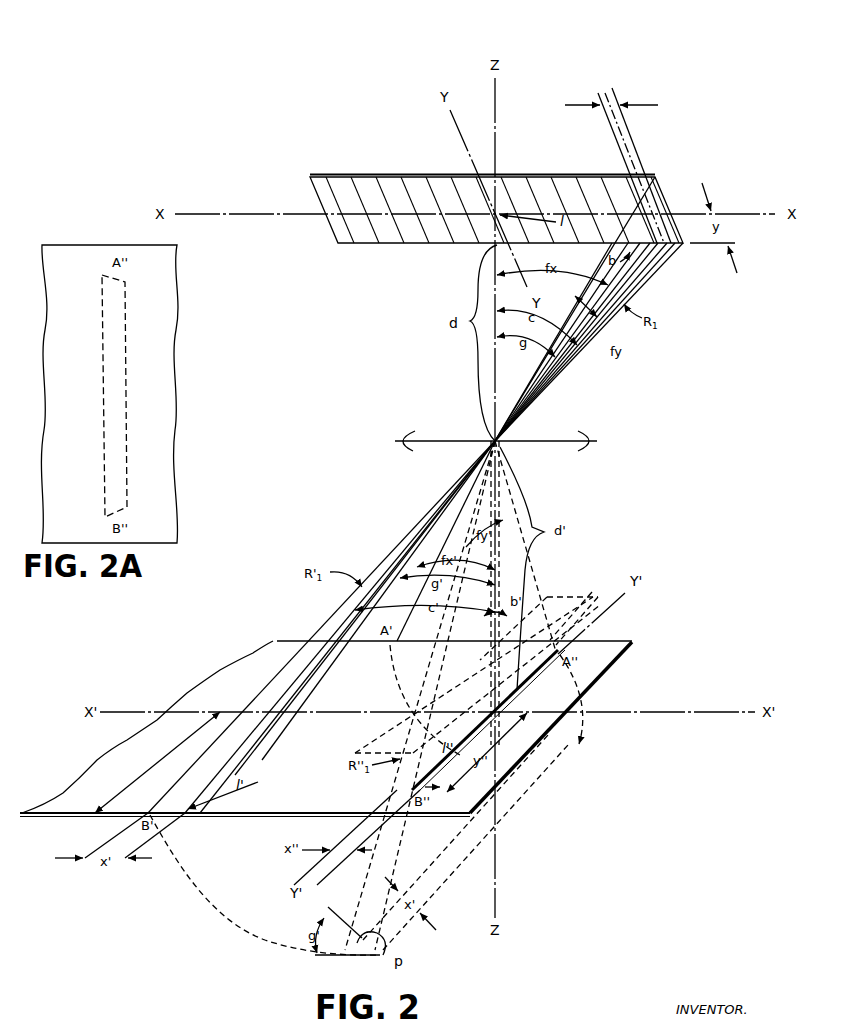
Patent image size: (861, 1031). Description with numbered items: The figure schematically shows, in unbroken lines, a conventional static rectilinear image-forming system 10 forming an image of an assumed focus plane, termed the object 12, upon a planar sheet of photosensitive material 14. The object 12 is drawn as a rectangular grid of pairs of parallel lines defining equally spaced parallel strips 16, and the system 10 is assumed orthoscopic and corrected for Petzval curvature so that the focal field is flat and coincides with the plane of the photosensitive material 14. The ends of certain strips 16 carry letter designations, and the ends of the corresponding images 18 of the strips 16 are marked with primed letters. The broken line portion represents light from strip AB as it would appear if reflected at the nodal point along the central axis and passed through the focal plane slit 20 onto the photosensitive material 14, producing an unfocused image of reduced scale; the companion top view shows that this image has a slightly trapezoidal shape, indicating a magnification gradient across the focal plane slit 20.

The image-forming system 10 is at (474, 408).
The object 12 is at (500, 160).
The photosensitive material 14 is at (614, 655).
The strips 16 is at (606, 186).
The images 18 is at (200, 782).
The focal plane slit 20 is at (563, 611).